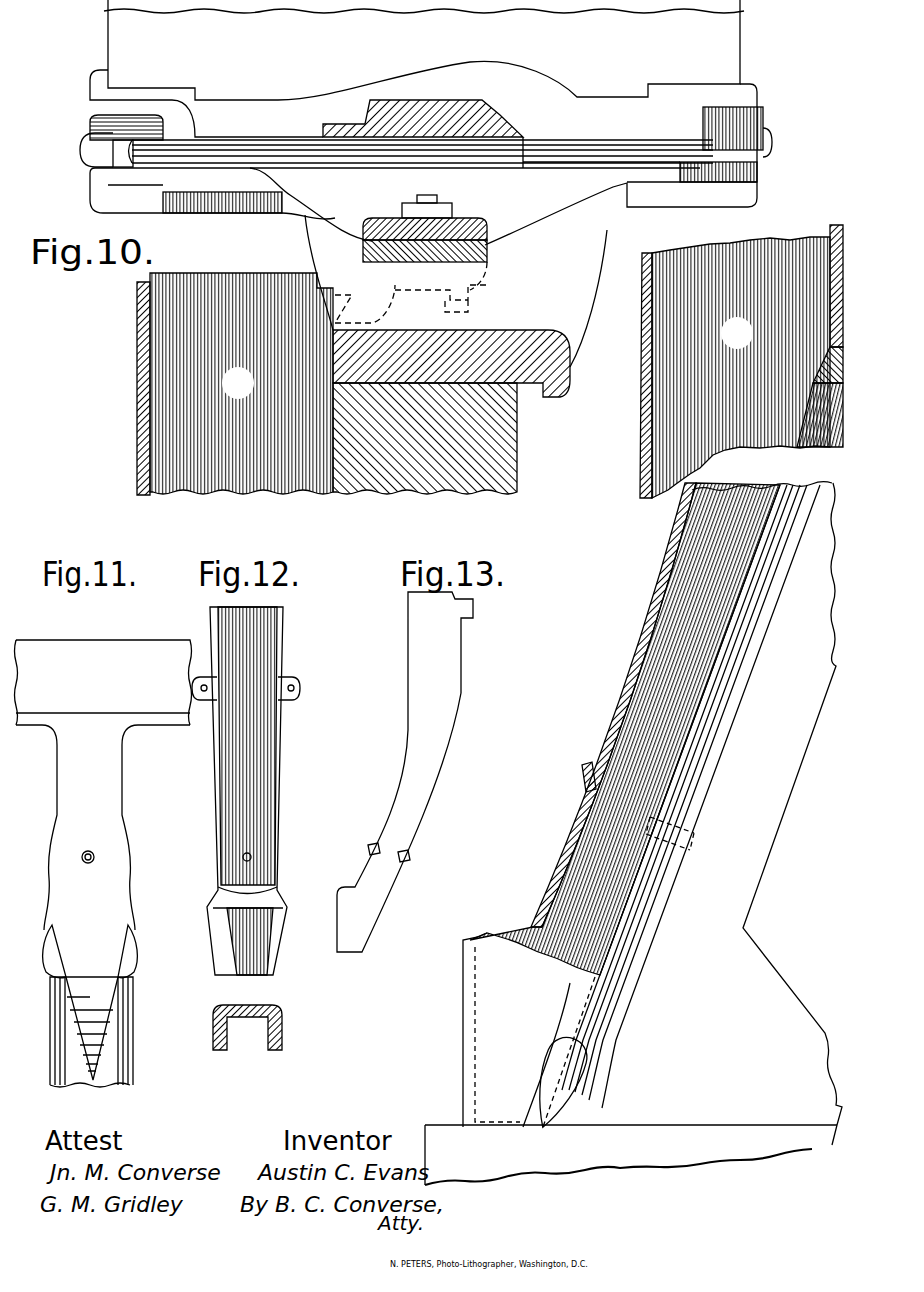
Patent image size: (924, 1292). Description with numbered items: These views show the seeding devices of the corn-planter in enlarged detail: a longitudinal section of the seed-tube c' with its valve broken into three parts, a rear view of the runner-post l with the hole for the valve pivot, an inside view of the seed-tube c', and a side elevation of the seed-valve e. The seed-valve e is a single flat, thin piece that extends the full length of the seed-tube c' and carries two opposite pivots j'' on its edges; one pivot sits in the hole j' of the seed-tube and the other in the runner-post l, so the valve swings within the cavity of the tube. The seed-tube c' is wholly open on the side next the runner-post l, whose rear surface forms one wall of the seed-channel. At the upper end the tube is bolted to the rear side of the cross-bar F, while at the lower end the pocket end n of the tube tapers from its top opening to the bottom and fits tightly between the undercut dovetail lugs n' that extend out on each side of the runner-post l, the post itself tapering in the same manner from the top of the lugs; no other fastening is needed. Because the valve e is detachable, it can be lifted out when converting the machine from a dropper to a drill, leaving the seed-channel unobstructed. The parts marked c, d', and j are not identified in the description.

In FIG. 10, the cross block c is at (439, 229).
In FIG. 10, the seed-tube c' is at (473, 361).
In FIG. 12, the seed-tube c' is at (249, 791).
In FIG. 13, the seed-tube c' is at (613, 705).
In FIG. 10, the head frame d' is at (424, 50).
In FIG. 10, the seed-valve e is at (496, 367).
In FIG. 13, the seed-valve e is at (584, 728).
In FIG. 11, the cross-bar F is at (103, 682).
In FIG. 11, the runner-post l is at (103, 902).
In FIG. 13, the runner-post l is at (702, 814).
In FIG. 13, the pin j is at (532, 795).
In FIG. 11, the hole j' is at (94, 872).
In FIG. 12, the hole j' is at (220, 860).
In FIG. 13, the pivots j'' is at (527, 810).
In FIG. 12, the pocket end n is at (258, 979).
In FIG. 13, the pocket end n is at (516, 1030).
In FIG. 11, the dovetail lugs n' is at (93, 951).
In FIG. 13, the dovetail lugs n' is at (559, 1055).